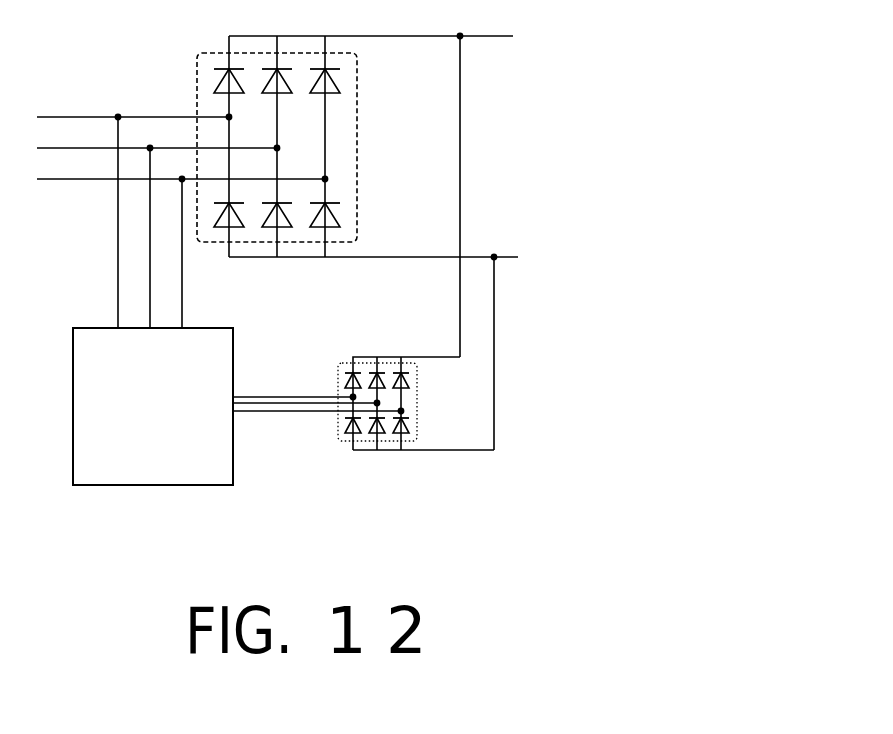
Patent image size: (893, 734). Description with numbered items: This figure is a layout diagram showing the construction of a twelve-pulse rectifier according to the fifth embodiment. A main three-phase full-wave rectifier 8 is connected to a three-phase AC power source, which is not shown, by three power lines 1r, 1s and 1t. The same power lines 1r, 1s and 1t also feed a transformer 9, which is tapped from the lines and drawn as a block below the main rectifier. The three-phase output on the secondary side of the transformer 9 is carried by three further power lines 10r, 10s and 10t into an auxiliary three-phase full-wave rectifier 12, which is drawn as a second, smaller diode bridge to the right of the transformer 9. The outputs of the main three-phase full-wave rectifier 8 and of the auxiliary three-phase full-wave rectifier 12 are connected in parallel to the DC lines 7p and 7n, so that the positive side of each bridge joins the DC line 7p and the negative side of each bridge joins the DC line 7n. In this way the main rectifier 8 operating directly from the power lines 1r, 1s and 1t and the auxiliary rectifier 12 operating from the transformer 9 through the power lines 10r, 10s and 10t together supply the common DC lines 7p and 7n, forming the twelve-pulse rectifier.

The power line 1r is at (134, 210).
The power line 1s is at (158, 226).
The power line 1t is at (182, 242).
The DC line 7p is at (375, 184).
The DC line 7n is at (379, 341).
The main three-phase full-wave rectifier 8 is at (263, 146).
The transformer 9 is at (153, 406).
The power line 10r is at (294, 386).
The power line 10s is at (279, 407).
The power line 10t is at (318, 423).
The auxiliary three-phase full-wave rectifier 12 is at (416, 403).